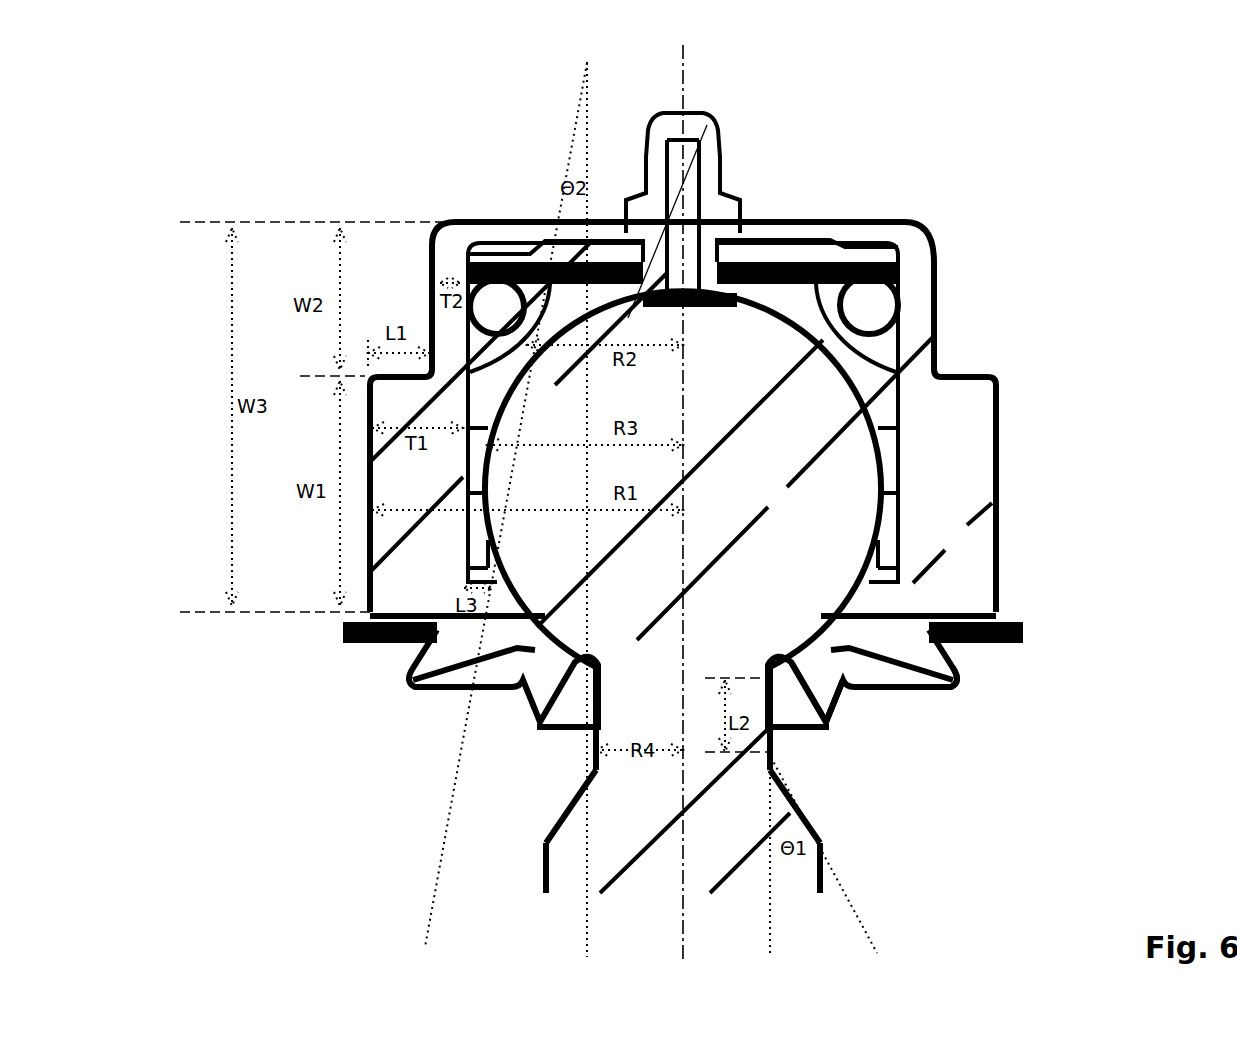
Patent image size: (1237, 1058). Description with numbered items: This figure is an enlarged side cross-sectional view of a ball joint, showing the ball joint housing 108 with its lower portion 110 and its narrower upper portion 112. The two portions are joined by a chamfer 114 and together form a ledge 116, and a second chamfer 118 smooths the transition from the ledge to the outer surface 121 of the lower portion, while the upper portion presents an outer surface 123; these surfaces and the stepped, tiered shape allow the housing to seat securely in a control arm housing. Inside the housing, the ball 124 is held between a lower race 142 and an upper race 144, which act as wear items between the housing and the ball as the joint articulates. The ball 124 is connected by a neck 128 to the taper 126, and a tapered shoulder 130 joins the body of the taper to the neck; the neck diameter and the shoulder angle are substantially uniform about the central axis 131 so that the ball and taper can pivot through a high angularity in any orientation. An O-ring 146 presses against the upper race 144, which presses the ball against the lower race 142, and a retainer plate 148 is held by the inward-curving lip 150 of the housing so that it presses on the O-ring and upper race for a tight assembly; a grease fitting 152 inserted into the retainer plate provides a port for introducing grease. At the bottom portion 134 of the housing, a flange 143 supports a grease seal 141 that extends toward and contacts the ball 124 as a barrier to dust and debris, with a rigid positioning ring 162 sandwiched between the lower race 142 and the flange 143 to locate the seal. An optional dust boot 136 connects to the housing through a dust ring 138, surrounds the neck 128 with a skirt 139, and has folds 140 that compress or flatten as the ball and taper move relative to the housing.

The ball joint housing 108 is at (1028, 186).
The lower portion 110 is at (960, 480).
The upper portion 112 is at (910, 308).
The chamfer 114 is at (940, 370).
The ledge 116 is at (965, 373).
The chamfer 118 is at (990, 378).
The outer surface of the lower portion 121 is at (1000, 522).
The outer surface of the upper portion 123 is at (937, 367).
The ball 124 is at (830, 470).
The taper 126 is at (820, 887).
The neck 128 is at (773, 727).
The shoulder 130 is at (753, 750).
The central axis 131 is at (687, 80).
The bottom portion 134 is at (428, 592).
The dust boot 136 is at (873, 680).
The dust ring 138 is at (960, 645).
The skirt 139 is at (800, 730).
The folds 140 is at (759, 740).
The grease seal 141 is at (1000, 643).
The lower race 142 is at (882, 543).
The flange 143 is at (885, 598).
The upper race 144 is at (867, 377).
The O-ring 146 is at (933, 260).
The retainer plate 148 is at (813, 253).
The lip 150 is at (867, 297).
The grease fitting 152 is at (710, 203).
The positioning ring 162 is at (883, 573).